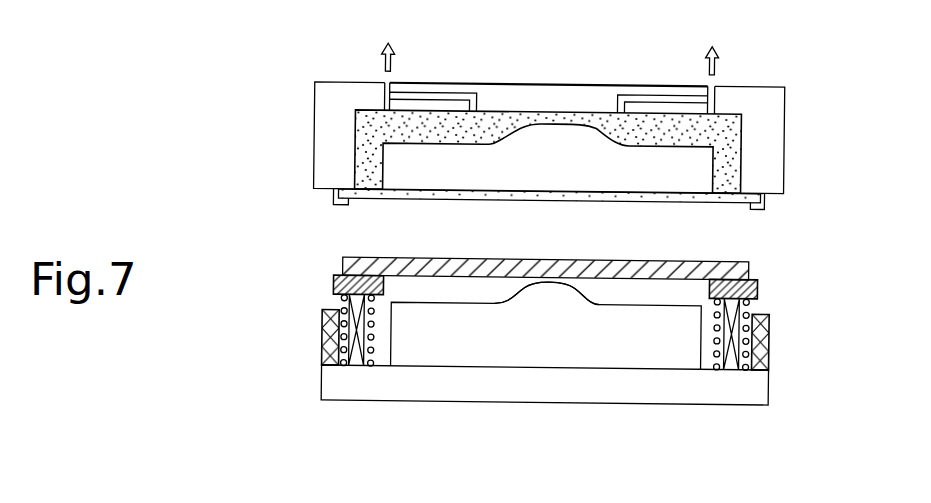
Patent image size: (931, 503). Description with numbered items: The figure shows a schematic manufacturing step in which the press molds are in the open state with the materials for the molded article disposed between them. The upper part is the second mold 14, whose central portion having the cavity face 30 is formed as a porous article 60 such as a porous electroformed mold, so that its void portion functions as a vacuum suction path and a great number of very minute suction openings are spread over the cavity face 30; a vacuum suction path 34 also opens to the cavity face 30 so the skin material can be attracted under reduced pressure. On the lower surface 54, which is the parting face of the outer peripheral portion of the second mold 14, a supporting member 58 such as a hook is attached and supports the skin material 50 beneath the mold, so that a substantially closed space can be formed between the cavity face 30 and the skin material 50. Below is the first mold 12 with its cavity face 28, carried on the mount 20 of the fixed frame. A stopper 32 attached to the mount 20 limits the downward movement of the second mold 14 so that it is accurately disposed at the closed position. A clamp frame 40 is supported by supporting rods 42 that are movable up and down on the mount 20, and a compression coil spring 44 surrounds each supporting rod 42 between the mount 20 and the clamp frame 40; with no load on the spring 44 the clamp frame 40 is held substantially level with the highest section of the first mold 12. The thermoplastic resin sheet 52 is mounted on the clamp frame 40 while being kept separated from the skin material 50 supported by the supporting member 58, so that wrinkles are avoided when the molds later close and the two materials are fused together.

The first mold 12 is at (653, 336).
The second mold 14 is at (538, 88).
The mount 20 is at (498, 386).
The cavity face 28 is at (634, 296).
The cavity face 30 is at (515, 137).
The stopper 32 is at (323, 324).
The vacuum suction path 34 is at (417, 96).
The clamp frame 40 is at (335, 289).
The supporting rod 42 is at (358, 331).
The compression coil spring 44 is at (326, 357).
The skin material 50 is at (710, 200).
The thermoplastic resin sheet 52 is at (750, 270).
The lower surface 54 is at (325, 193).
The supporting member 58 is at (348, 207).
The porous article 60 is at (719, 128).